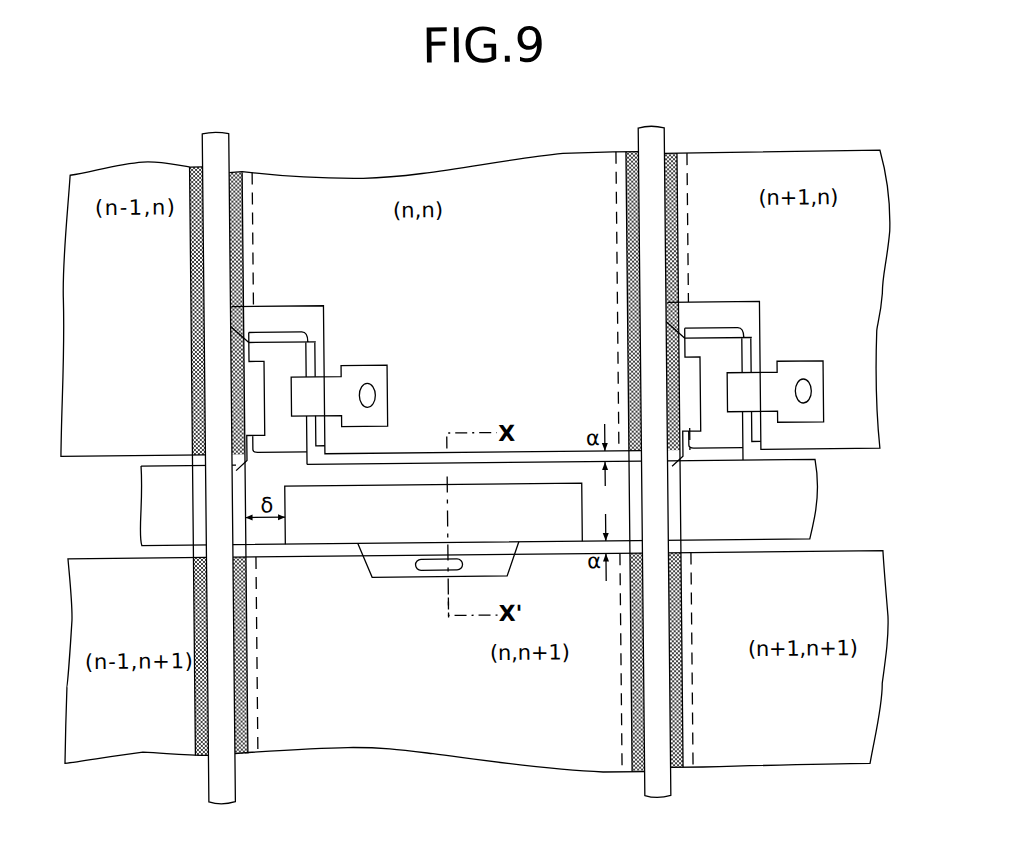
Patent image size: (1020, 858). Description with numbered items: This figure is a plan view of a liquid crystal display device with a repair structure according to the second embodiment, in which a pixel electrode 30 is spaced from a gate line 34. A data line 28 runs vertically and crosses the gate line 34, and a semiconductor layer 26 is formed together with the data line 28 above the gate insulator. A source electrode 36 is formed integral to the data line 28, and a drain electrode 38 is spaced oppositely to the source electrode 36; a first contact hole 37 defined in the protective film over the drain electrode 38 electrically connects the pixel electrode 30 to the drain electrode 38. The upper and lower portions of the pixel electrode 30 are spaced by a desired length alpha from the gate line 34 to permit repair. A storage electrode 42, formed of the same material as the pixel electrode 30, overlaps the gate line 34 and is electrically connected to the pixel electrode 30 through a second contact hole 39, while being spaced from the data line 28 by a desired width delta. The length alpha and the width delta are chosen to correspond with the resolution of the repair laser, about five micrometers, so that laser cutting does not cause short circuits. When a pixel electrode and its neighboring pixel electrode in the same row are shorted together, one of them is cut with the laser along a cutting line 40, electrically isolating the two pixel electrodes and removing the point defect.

The semiconductor layer 26 is at (232, 769).
The data line 28 is at (246, 686).
The pixel electrode 30 is at (561, 302).
The gate line 34 is at (321, 302).
The source electrode 36 is at (270, 351).
The first contact hole 37 is at (380, 393).
The drain electrode 38 is at (378, 364).
The second contact hole 39 is at (421, 570).
The cutting line 40 is at (620, 244).
The storage electrode 42 is at (434, 513).